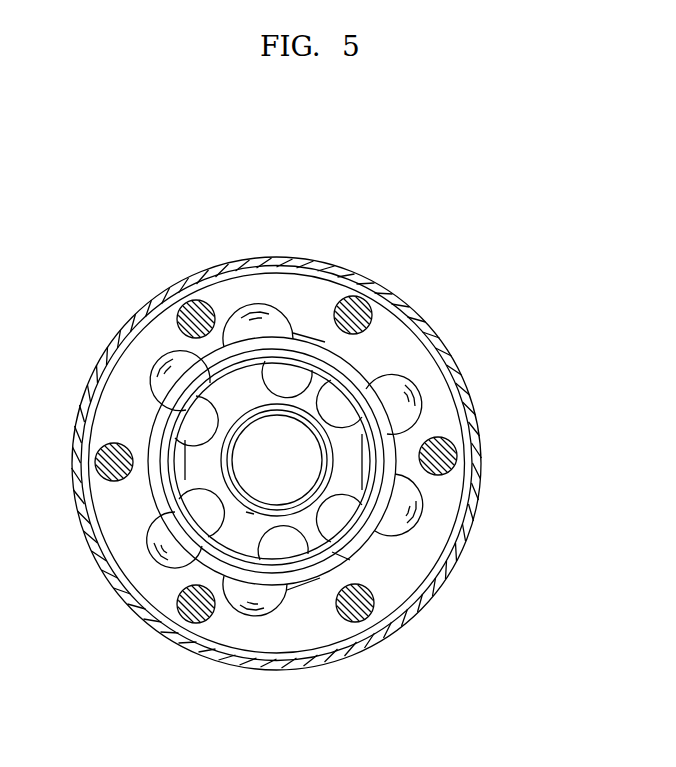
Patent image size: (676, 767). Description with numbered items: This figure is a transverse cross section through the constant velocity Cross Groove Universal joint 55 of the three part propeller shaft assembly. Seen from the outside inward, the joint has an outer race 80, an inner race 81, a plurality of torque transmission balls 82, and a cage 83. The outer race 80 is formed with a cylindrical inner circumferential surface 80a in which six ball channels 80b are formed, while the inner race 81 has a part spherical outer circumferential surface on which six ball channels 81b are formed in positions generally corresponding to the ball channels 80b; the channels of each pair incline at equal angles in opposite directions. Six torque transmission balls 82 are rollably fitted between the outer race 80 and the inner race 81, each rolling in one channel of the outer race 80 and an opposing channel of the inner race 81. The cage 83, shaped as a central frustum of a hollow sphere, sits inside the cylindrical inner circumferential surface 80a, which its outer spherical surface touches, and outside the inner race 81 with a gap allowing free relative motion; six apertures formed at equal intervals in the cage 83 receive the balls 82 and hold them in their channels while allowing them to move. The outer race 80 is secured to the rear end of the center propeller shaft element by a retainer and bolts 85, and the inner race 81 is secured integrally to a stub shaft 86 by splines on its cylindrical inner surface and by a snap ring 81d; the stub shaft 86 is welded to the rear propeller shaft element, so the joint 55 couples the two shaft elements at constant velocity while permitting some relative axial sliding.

The Cross Groove Universal joint 55 is at (463, 220).
The outer race 80 is at (268, 287).
The cylindrical inner circumferential surface 80a is at (416, 522).
The ball channels 80b is at (172, 352).
The inner race 81 is at (346, 462).
The ball channels 81b is at (343, 556).
The snap ring 81d is at (250, 513).
The torque transmission balls 82 is at (288, 318).
The cage 83 is at (338, 350).
The bolts 85 is at (354, 610).
The stub shaft 86 is at (253, 453).